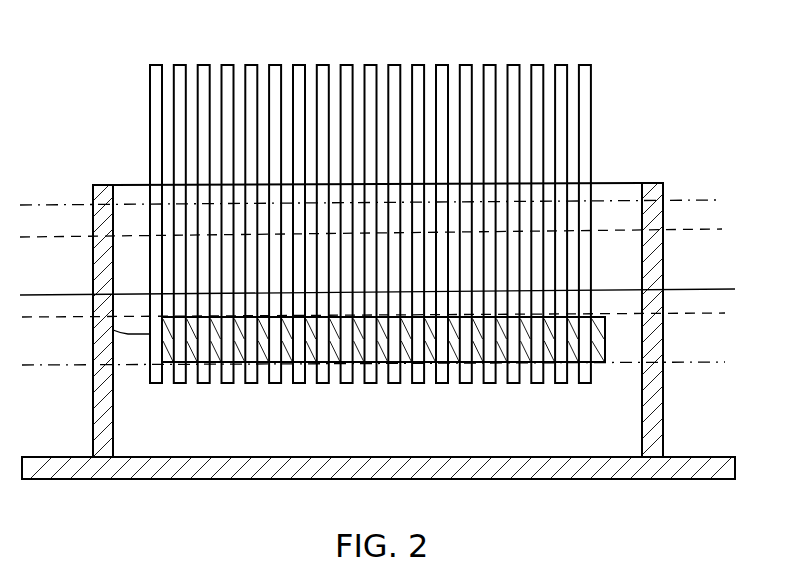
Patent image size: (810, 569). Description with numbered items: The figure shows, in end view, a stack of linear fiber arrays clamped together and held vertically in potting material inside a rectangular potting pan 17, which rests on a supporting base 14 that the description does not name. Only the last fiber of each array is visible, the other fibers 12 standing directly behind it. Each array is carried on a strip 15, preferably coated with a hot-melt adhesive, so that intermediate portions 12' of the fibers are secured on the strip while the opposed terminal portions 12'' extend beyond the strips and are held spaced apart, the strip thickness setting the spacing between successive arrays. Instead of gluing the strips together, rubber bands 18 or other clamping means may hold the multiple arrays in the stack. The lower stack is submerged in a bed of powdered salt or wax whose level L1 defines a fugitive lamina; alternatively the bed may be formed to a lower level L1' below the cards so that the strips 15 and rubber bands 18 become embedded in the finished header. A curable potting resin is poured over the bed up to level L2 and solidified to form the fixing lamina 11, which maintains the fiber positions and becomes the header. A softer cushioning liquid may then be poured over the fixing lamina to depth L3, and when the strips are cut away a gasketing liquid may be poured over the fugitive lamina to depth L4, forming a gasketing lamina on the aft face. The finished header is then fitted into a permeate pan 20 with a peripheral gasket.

The fixing lamina 11 is at (636, 258).
The fibers 12 is at (370, 199).
The intermediate portions 12' is at (134, 253).
The terminal portions 12'' is at (144, 394).
The base plate 14 is at (56, 457).
The strip 15 is at (610, 362).
The potting pan 17 is at (663, 410).
The rubber bands 18 is at (113, 330).
The permeate pan 20 is at (93, 192).
The level of the bed of powdered salt L1 is at (401, 334).
The level of the bed of powder below the cards L1' is at (396, 392).
The level of the fixing liquid L2 is at (725, 229).
The depth of the cushioning liquid L3 is at (725, 200).
The depth of the gasketing liquid L4 is at (730, 289).